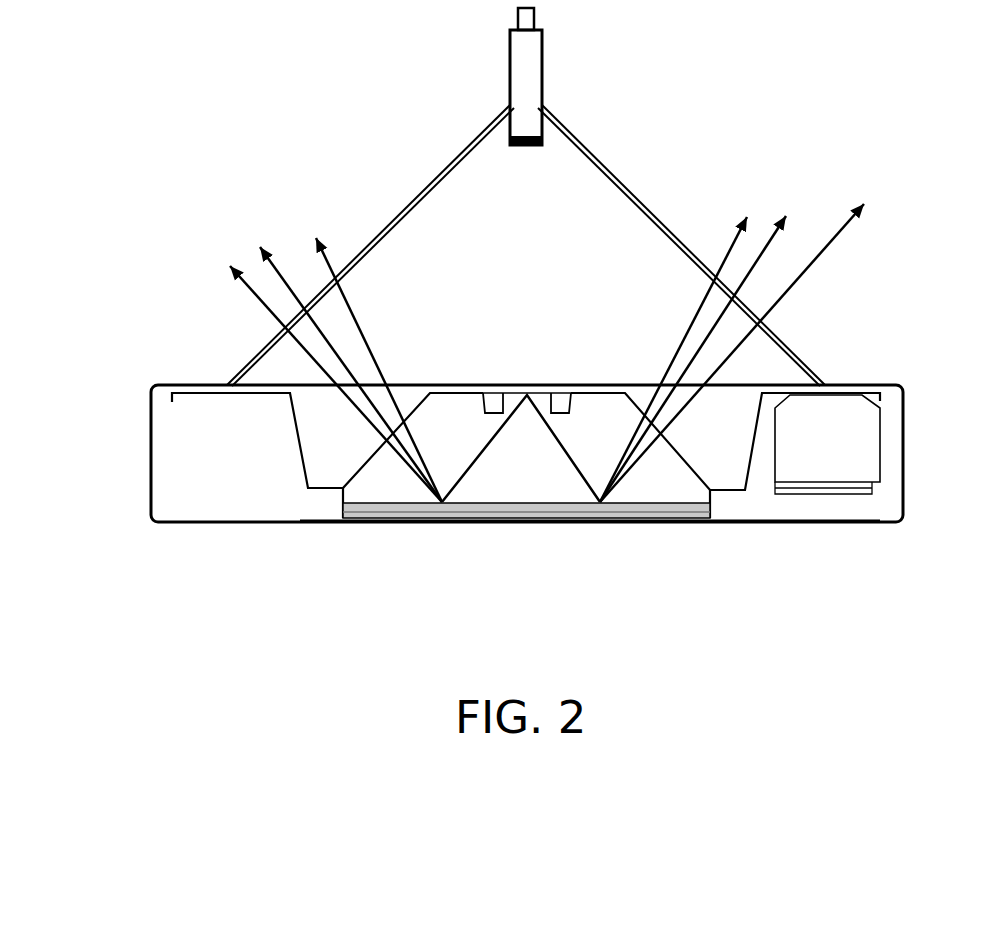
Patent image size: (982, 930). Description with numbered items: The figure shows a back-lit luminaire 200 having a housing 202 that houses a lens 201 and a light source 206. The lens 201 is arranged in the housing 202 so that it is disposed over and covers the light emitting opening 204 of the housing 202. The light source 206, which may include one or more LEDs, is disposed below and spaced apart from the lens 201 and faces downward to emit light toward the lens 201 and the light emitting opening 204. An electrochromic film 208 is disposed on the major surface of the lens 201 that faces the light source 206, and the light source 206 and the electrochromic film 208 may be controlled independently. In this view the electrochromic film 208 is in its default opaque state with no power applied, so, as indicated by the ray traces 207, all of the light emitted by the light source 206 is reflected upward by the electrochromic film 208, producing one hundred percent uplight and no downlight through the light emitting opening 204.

The luminaire 200 is at (880, 73).
The lens 201 is at (370, 522).
The housing 202 is at (868, 508).
The light emitting opening 204 is at (661, 562).
The light source 206 is at (528, 392).
The ray traces 207 is at (236, 308).
The electrochromic film 208 is at (690, 510).